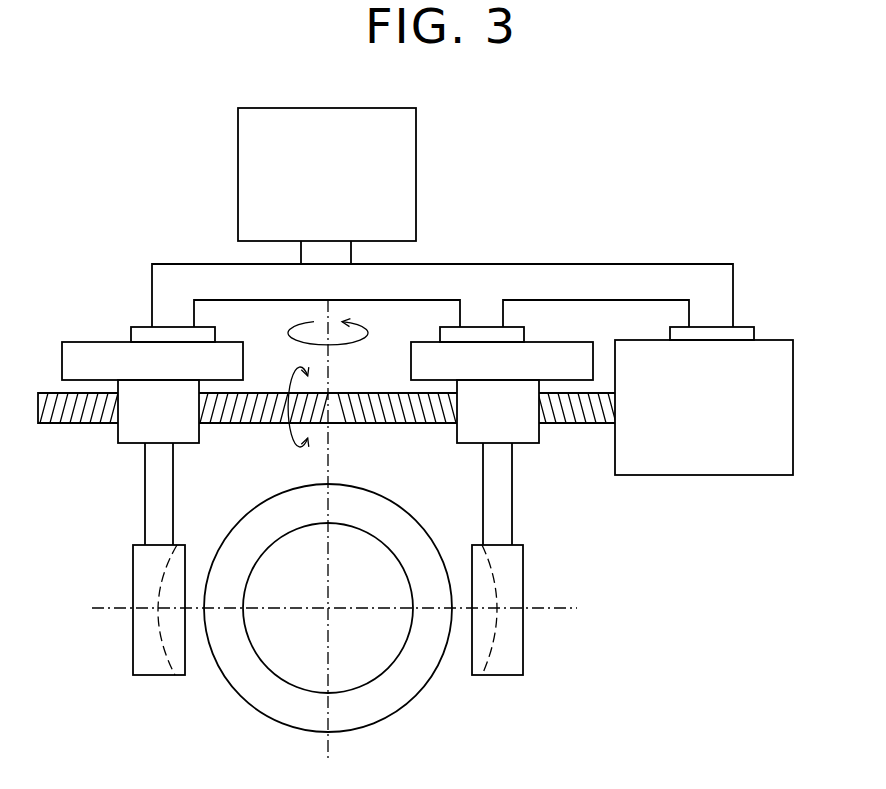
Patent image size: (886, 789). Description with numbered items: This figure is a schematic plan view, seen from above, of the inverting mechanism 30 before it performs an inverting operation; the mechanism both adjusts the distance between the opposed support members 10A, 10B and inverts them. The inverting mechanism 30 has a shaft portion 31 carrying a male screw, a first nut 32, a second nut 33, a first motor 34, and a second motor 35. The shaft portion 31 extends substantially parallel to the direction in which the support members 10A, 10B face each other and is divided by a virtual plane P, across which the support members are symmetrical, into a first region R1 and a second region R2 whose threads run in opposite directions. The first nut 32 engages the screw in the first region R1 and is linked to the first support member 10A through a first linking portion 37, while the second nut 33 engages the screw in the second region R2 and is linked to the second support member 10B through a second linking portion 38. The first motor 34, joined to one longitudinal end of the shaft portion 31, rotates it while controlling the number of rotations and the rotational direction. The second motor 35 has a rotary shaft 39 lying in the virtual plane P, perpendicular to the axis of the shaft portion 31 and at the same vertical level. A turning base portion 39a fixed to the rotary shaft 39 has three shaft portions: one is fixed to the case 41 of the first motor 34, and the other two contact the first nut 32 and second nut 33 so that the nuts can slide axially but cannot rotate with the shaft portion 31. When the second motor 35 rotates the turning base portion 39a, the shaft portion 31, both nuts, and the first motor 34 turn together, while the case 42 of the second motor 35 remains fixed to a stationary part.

The inverting mechanism 30 is at (563, 175).
The second motor 35 is at (368, 130).
The case of the second motor 42 is at (367, 152).
The rotary shaft 39 is at (315, 255).
The turning base portion 39a is at (648, 264).
The first motor 34 is at (733, 362).
The case of the first motor 41 is at (741, 365).
The shaft portion 31 is at (373, 393).
The first nut 32 is at (128, 422).
The second nut 33 is at (474, 432).
The first linking portion 37 is at (158, 508).
The second linking portion 38 is at (503, 495).
The first support member 10A is at (133, 577).
The second support member 10B is at (527, 570).
The virtual plane P is at (329, 758).
The first region R1 is at (257, 408).
The second region R2 is at (402, 422).